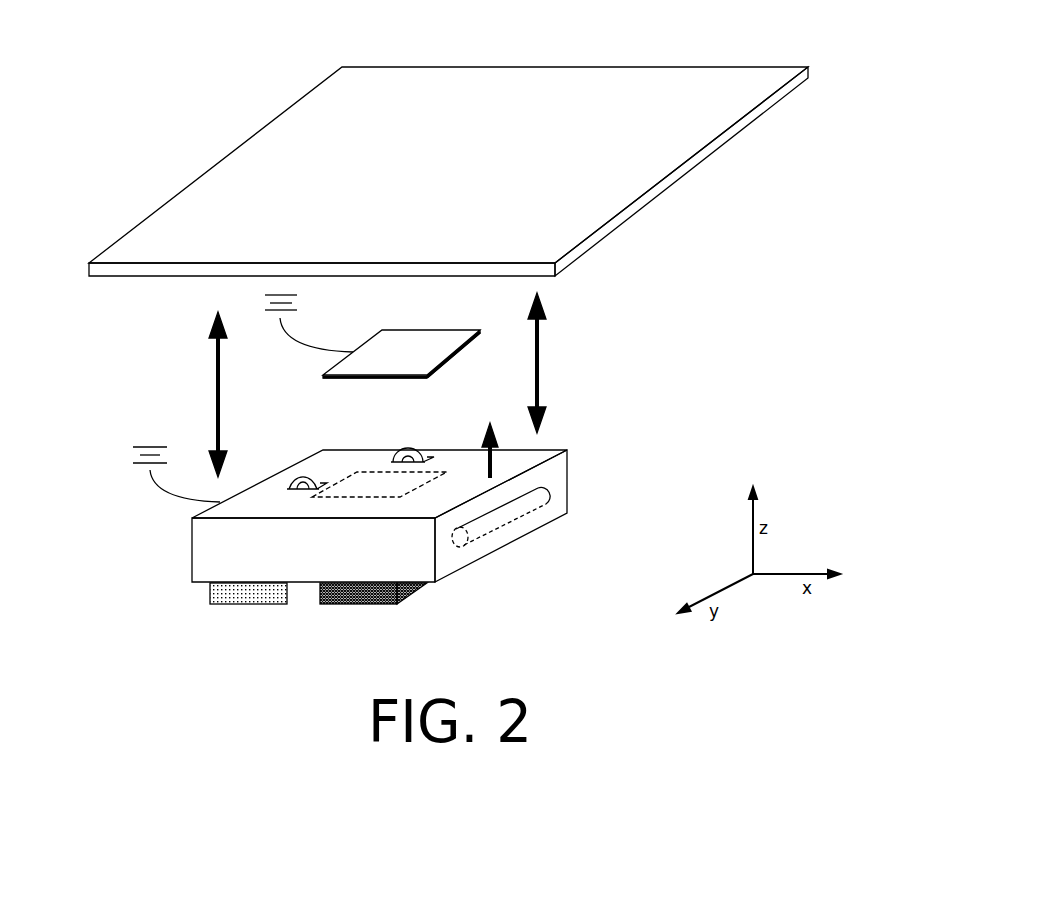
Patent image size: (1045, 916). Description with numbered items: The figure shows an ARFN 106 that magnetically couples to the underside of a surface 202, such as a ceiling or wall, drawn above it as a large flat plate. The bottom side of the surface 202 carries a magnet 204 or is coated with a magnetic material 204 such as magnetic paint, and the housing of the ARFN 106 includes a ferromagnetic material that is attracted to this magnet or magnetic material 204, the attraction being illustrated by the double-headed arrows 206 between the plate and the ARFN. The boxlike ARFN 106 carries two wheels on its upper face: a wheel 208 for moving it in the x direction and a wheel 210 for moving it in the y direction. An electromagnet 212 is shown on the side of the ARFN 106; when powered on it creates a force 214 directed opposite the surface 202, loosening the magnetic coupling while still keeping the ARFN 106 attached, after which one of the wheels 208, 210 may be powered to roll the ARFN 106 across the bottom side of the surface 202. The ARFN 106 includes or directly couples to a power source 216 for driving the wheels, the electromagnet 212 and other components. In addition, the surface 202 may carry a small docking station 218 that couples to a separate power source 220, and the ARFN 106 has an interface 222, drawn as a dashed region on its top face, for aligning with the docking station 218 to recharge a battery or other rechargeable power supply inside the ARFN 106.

The surface 202 is at (448, 138).
The magnet or magnetic material 204 is at (448, 171).
The arrows 206 is at (376, 385).
The power source 220 is at (241, 320).
The docking station 218 is at (402, 339).
The power source 216 is at (131, 475).
The ARFN 106 is at (417, 505).
The interface 222 is at (328, 565).
The wheel 210 is at (210, 532).
The wheel 208 is at (373, 435).
The electromagnet 212 is at (520, 526).
The force 214 is at (574, 450).